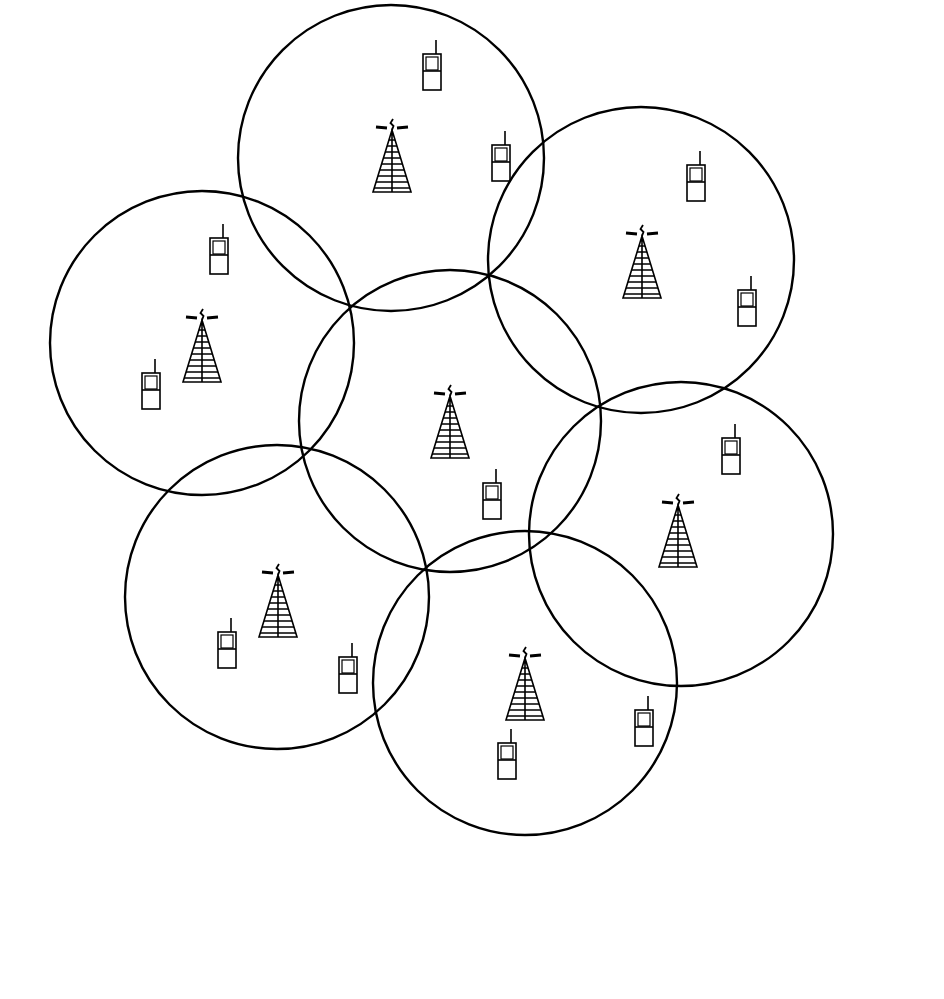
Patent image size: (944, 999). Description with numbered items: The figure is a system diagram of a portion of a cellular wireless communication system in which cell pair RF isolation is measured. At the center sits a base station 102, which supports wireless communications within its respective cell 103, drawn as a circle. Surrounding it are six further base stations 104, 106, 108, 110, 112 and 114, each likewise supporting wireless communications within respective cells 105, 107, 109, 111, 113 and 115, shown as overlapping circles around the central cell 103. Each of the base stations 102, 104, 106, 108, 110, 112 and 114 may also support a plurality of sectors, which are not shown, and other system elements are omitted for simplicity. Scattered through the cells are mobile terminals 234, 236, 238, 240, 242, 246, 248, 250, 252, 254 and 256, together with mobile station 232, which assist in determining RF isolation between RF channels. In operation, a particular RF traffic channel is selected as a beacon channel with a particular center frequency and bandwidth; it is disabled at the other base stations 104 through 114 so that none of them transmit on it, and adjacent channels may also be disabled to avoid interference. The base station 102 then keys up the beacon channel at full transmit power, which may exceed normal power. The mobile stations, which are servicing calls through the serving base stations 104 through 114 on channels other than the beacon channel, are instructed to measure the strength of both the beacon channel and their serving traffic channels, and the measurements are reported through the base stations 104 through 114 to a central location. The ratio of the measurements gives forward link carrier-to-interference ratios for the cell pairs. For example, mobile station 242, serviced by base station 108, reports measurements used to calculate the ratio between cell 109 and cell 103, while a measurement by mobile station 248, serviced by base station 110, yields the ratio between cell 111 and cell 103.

The base station 102 is at (437, 435).
The cell 103 is at (413, 272).
The base station 104 is at (373, 172).
The cell 105 is at (270, 63).
The base station 106 is at (623, 272).
The cell 107 is at (662, 108).
The base station 108 is at (693, 545).
The cell 109 is at (787, 423).
The base station 110 is at (508, 702).
The cell 111 is at (652, 768).
The base station 112 is at (263, 612).
The cell 113 is at (217, 738).
The base station 114 is at (190, 353).
The cell 115 is at (130, 207).
The mobile station 232 is at (483, 510).
The mobile terminal 234 is at (423, 82).
The mobile terminal 236 is at (492, 172).
The mobile terminal 238 is at (687, 190).
The mobile terminal 240 is at (738, 318).
The mobile station 242 is at (568, 689).
The mobile terminal 246 is at (635, 737).
The mobile station 248 is at (498, 770).
The mobile terminal 250 is at (339, 685).
The mobile terminal 252 is at (218, 660).
The mobile terminal 254 is at (142, 400).
The mobile terminal 256 is at (210, 265).